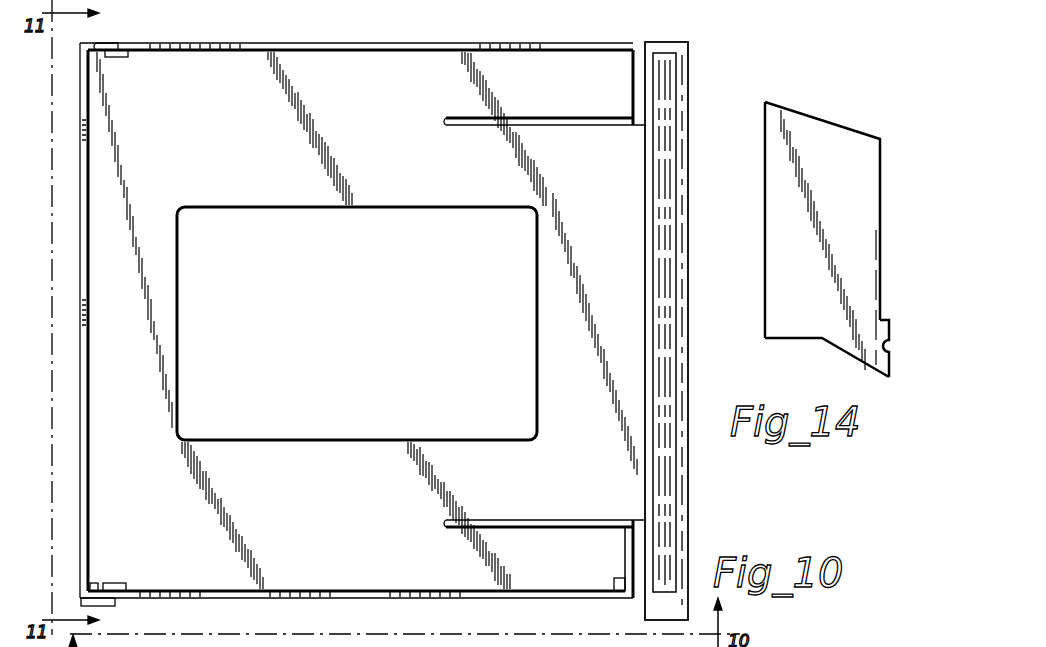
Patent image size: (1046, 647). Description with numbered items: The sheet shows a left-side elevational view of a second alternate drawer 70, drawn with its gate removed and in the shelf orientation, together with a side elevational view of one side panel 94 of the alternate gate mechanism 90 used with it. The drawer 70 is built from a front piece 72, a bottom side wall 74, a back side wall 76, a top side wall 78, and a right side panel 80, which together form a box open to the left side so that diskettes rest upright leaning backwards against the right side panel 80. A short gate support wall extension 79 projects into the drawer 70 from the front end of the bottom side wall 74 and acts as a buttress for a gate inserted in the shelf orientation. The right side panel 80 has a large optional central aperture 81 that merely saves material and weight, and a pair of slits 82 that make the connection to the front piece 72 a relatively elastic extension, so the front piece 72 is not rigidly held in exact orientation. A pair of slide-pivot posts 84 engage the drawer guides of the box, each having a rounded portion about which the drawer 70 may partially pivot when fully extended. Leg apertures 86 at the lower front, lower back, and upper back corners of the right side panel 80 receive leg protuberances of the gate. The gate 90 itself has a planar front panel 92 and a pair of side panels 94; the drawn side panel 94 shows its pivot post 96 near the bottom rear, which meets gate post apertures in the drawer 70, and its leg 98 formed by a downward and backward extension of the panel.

In FIG. 10, the drawer 70 is at (697, 93).
In FIG. 10, the front piece 72 is at (688, 399).
In FIG. 10, the bottom side wall 74 is at (347, 596).
In FIG. 10, the back side wall 76 is at (88, 339).
In FIG. 10, the top side wall 78 is at (343, 43).
In FIG. 10, the gate support wall extension 79 is at (625, 548).
In FIG. 10, the right side panel 80 is at (410, 161).
In FIG. 10, the central aperture 81 is at (254, 217).
In FIG. 10, the slits 82 is at (615, 124).
In FIG. 10, the slide-pivot posts 84 is at (113, 43).
In FIG. 10, the leg apertures 86 is at (118, 57).
In FIG. 14, the alternate gate mechanism 90 is at (846, 124).
In FIG. 14, the front panel 92 is at (765, 240).
In FIG. 14, the side panel 94 is at (850, 180).
In FIG. 14, the pivot post 96 is at (879, 344).
In FIG. 14, the leg 98 is at (869, 377).